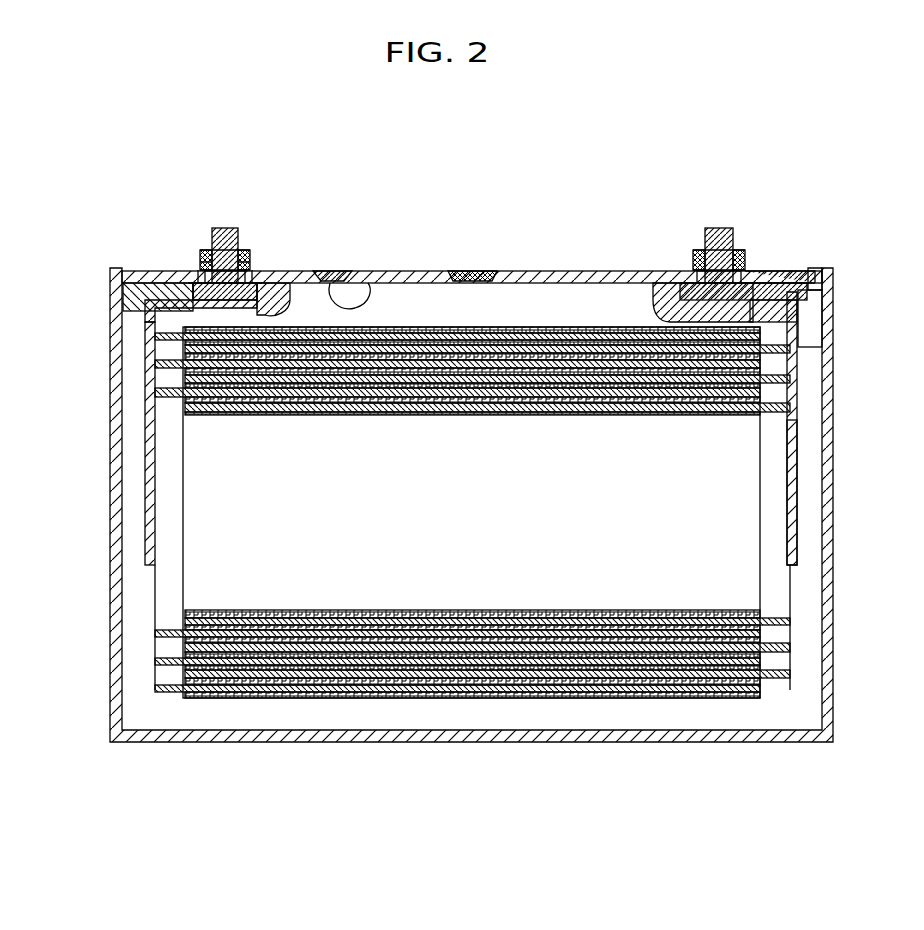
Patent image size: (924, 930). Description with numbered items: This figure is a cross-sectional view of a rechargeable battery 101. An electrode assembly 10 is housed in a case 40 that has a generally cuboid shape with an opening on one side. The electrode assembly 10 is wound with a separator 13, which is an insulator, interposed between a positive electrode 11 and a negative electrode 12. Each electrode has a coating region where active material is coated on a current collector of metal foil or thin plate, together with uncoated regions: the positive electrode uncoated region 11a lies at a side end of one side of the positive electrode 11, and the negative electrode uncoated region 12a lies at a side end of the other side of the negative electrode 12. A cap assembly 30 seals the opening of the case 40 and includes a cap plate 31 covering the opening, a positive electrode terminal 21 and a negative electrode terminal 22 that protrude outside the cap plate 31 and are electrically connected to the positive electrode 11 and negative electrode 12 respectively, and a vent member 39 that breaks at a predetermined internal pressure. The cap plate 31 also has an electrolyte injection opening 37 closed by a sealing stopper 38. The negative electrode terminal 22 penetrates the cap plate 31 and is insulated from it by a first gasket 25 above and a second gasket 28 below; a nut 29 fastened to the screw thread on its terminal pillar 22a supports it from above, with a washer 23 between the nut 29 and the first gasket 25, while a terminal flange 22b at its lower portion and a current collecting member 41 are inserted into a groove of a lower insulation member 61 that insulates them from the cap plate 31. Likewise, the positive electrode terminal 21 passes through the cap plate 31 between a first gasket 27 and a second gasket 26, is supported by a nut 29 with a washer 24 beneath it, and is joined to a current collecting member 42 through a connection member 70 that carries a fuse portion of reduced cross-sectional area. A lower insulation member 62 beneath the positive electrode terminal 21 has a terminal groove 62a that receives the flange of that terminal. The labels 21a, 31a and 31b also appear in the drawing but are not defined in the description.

The rechargeable battery 101 is at (451, 136).
The electrode assembly 10 is at (469, 569).
The positive electrode 11 is at (488, 572).
The positive electrode uncoated region 11a is at (775, 680).
The negative electrode 12 is at (453, 566).
The negative electrode uncoated region 12a is at (163, 692).
The separator 13 is at (415, 692).
The positive electrode terminal 21 is at (743, 210).
The first terminal plate 21a is at (716, 228).
The negative electrode terminal 22 is at (230, 221).
The terminal pillar 22a is at (257, 262).
The terminal flange 22b is at (165, 304).
The washer 23 is at (278, 290).
The washer 24 is at (690, 283).
The first gasket 25 is at (195, 268).
The second gasket 26 is at (815, 268).
The first gasket 27 is at (765, 272).
The second gasket 28 is at (190, 290).
The nut 29 is at (205, 252).
The cap assembly 30 is at (472, 232).
The cap plate 31 is at (538, 271).
The second terminal hole 31a is at (234, 228).
The first terminal hole 31b is at (705, 258).
The electrolyte injection opening 37 is at (364, 290).
The sealing stopper 38 is at (331, 271).
The vent member 39 is at (476, 271).
The case 40 is at (828, 405).
The current collecting member 41 is at (148, 470).
The current collecting member 42 is at (800, 478).
The lower insulation member 61 is at (125, 298).
The lower insulation member 62 is at (810, 295).
The terminal groove 62a is at (770, 312).
The connection member 70 is at (800, 345).